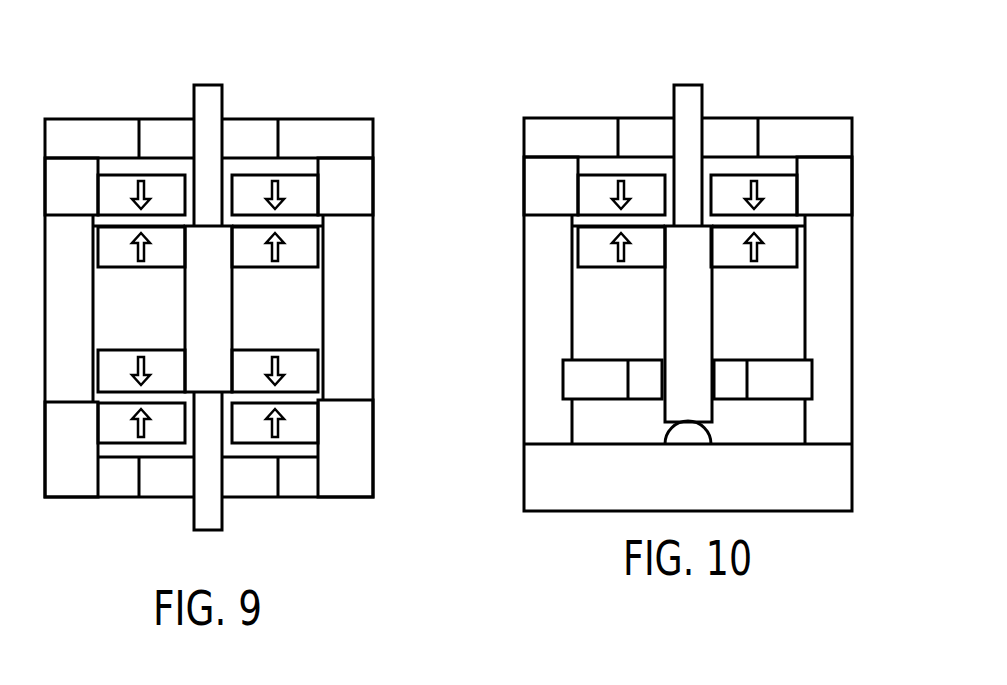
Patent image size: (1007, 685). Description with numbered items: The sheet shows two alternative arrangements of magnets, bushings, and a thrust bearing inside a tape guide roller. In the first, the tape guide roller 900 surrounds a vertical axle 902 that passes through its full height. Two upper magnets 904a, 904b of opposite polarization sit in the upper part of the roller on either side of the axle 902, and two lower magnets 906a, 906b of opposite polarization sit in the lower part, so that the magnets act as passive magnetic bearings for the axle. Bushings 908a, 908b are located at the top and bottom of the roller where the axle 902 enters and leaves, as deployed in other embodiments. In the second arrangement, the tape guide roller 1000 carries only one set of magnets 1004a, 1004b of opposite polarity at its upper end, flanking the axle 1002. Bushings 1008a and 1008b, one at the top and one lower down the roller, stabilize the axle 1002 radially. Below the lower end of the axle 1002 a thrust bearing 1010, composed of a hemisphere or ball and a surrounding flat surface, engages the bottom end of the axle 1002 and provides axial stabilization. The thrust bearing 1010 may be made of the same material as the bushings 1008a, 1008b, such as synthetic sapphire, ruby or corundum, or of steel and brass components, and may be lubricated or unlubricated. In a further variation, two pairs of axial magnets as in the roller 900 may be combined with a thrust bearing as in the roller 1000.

In FIG. 9, the tape guide roller 900 is at (362, 117).
In FIG. 9, the axle 902 is at (207, 83).
In FIG. 9, the upper magnet 904a is at (300, 199).
In FIG. 9, the upper magnet 904b is at (300, 248).
In FIG. 9, the lower magnet 906a is at (300, 373).
In FIG. 9, the lower magnet 906b is at (300, 427).
In FIG. 9, the bushing 908a is at (258, 128).
In FIG. 9, the bushing 908b is at (263, 498).
In FIG. 10, the tape guide roller 1000 is at (835, 118).
In FIG. 10, the axle 1002 is at (688, 82).
In FIG. 10, the magnet 1004a is at (785, 190).
In FIG. 10, the magnet 1004b is at (785, 245).
In FIG. 10, the bushing 1008a is at (738, 128).
In FIG. 10, the bushing 1008b is at (734, 368).
In FIG. 10, the thrust bearing 1010 is at (667, 435).